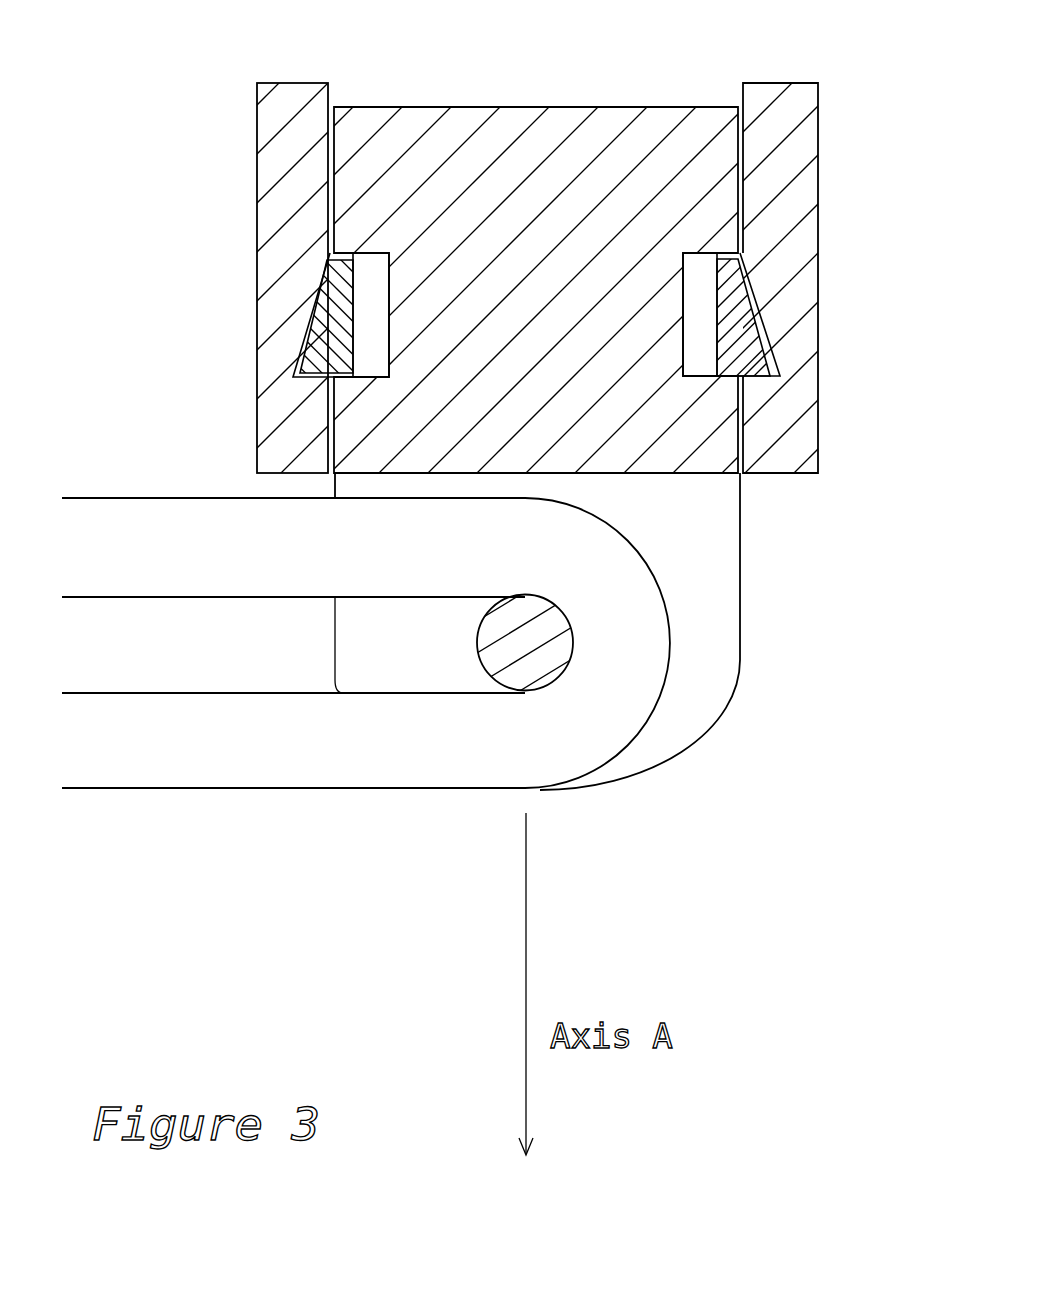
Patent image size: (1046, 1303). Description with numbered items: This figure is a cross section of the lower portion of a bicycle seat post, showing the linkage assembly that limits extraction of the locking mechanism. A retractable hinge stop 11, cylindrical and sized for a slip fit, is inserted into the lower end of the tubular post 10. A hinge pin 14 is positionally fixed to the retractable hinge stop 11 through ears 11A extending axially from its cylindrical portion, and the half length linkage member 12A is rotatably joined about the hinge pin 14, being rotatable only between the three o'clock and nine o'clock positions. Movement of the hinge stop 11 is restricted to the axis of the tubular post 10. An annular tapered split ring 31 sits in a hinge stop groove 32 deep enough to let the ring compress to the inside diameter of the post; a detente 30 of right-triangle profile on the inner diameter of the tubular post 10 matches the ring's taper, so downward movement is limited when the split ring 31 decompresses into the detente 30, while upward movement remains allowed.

The tubular post 10 is at (283, 147).
The retractable hinge stop 11 is at (671, 435).
The ear 11A is at (712, 682).
The half length linkage member 12A is at (307, 740).
The hinge pin 14 is at (525, 668).
The detente 30 is at (297, 362).
The annular tapered split ring 31 is at (320, 328).
The hinge stop groove 32 is at (368, 290).